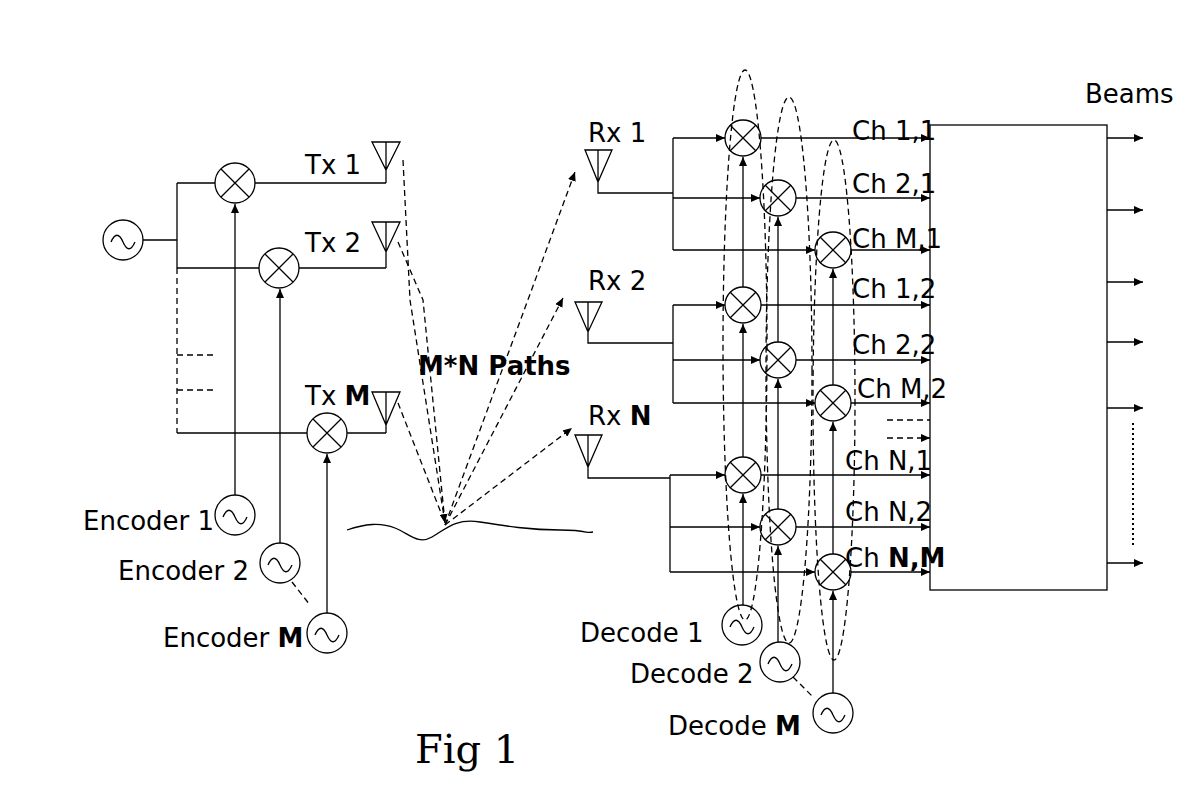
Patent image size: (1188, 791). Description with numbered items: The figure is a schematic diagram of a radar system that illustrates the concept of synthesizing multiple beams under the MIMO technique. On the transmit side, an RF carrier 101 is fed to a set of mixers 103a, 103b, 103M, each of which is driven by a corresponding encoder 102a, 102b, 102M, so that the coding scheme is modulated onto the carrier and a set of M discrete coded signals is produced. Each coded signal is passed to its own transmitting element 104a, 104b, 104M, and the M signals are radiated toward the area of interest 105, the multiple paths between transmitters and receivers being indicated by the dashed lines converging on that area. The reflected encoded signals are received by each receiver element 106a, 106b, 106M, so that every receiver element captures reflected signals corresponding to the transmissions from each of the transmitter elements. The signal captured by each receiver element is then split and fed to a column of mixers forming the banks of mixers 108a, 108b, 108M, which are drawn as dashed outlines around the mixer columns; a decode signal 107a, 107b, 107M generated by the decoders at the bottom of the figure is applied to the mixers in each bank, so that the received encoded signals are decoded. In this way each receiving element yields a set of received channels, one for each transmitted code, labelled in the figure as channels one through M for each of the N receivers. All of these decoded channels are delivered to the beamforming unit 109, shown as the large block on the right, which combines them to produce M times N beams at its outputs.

The carrier 101 is at (106, 248).
The encoder 102a is at (218, 503).
The encoder 102b is at (297, 566).
The encoder 102M is at (342, 644).
The mixer 103a is at (222, 168).
The mixer 103b is at (283, 250).
The mixer 103M is at (338, 448).
The transmitting element 104a is at (388, 138).
The transmitting element 104b is at (388, 220).
The transmitting element 104M is at (390, 390).
The area of interest 105 is at (548, 535).
The receiver element 106a is at (587, 153).
The receiver element 106b is at (586, 334).
The receiver element 106M is at (602, 462).
The decode signal 107a is at (730, 620).
The decode signal 107b is at (807, 658).
The decode signal 107M is at (862, 715).
The bank of mixers 108a is at (745, 72).
The bank of mixers 108b is at (790, 98).
The bank of mixers 108M is at (834, 142).
The beamforming unit 109 is at (1028, 575).